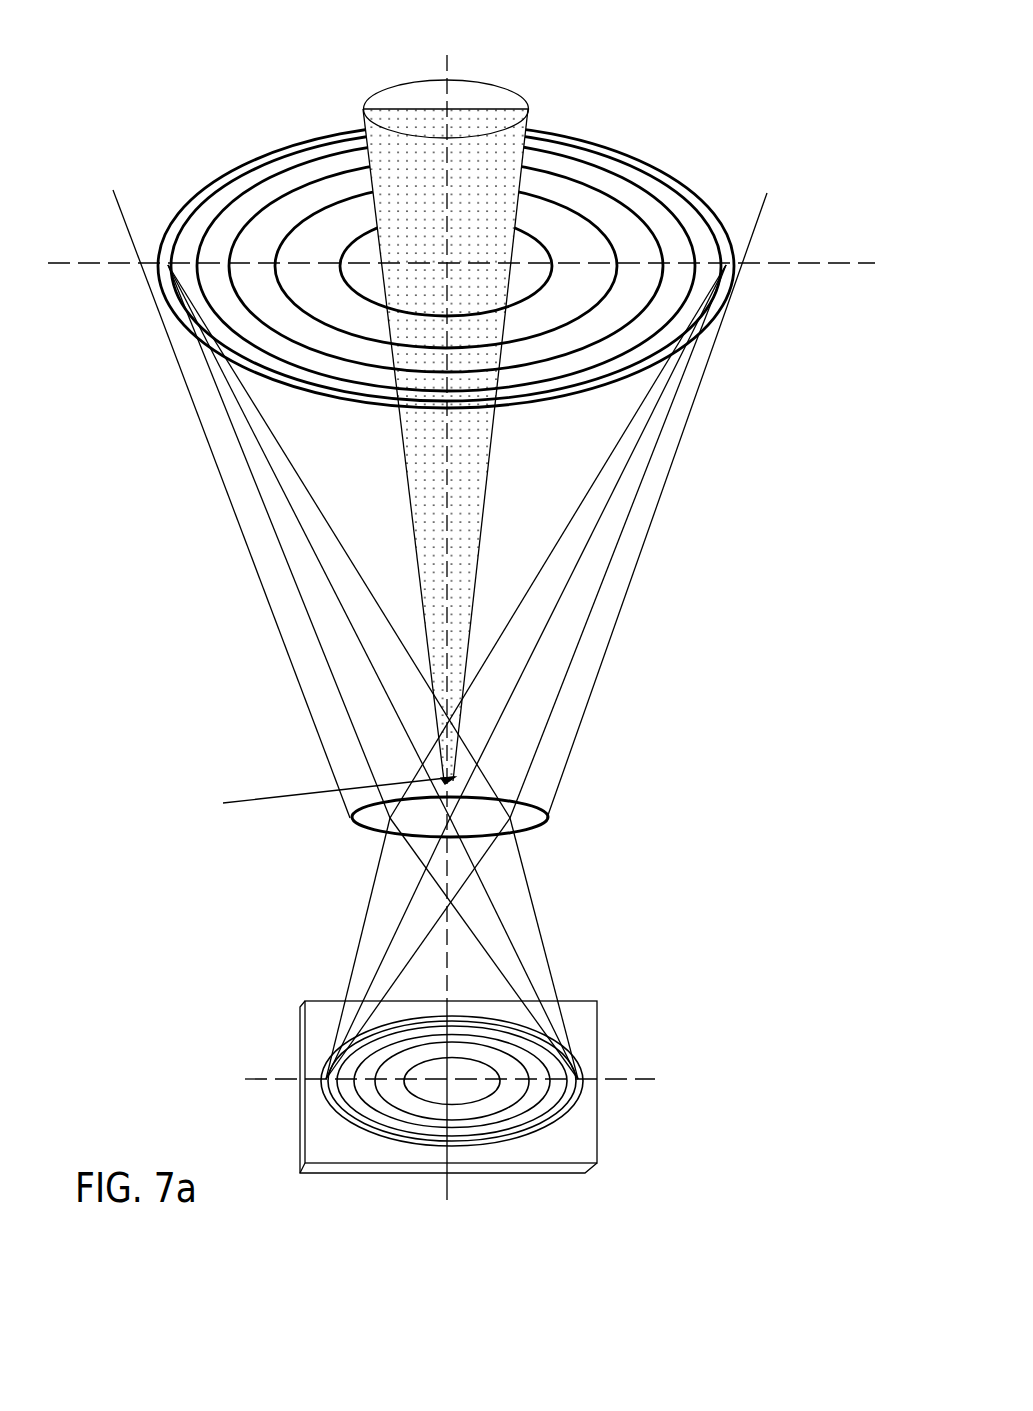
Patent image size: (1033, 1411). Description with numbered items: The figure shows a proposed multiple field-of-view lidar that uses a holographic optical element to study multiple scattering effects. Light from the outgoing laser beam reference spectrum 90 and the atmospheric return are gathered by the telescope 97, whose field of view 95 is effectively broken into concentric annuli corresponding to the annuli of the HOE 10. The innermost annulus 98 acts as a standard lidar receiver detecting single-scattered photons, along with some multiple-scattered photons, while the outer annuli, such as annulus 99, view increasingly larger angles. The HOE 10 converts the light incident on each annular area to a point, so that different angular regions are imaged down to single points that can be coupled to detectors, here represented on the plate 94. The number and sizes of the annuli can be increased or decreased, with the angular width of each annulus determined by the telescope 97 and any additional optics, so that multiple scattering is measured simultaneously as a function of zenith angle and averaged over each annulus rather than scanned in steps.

The innermost annulus 98 is at (492, 93).
The field of view 95 is at (640, 158).
The outer annulus 99 is at (668, 298).
The telescope 97 is at (533, 826).
The outgoing laser beam reference spectrum 90 is at (250, 802).
The HOE 10 is at (262, 1079).
The substrate plate 94 is at (588, 1137).